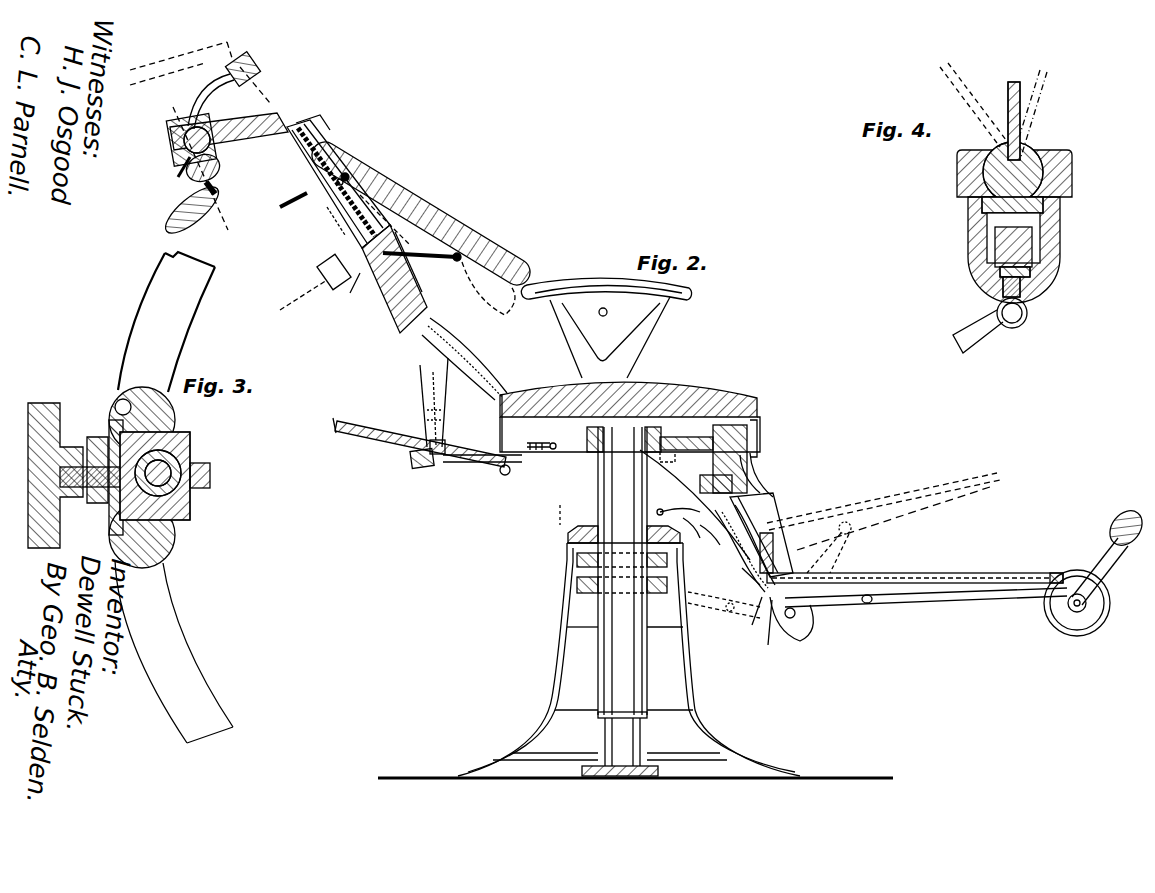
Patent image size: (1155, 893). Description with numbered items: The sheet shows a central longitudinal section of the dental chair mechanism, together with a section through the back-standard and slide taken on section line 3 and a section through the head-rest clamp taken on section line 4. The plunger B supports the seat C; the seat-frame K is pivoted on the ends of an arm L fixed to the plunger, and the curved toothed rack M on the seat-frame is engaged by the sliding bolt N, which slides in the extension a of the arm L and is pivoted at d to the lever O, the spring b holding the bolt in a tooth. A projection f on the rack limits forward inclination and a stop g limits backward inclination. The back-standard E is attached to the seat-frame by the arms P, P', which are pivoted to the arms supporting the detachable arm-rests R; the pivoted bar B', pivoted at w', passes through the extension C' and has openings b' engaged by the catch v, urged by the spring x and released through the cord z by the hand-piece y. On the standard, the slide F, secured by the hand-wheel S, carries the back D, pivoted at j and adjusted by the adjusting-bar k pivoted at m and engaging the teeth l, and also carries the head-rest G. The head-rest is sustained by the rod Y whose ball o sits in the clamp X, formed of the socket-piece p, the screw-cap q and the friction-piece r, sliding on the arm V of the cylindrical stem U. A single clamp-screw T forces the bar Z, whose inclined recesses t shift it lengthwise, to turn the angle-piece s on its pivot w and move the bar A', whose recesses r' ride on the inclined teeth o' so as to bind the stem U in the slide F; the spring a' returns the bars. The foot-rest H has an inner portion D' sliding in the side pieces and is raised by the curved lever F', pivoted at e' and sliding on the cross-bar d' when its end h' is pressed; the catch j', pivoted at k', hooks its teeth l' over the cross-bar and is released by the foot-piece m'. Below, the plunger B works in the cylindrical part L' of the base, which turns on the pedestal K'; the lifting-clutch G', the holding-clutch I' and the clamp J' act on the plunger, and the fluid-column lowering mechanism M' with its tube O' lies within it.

In FIG. 2, the fluid-column lowering mechanism M' is at (635, 745).
In FIG. 2, the pedestal K' is at (629, 659).
In FIG. 2, the lifting-clutch G' is at (598, 573).
In FIG. 2, the clamp J' is at (624, 516).
In FIG. 2, the holding-clutch I' is at (611, 533).
In FIG. 2, the tube O' is at (551, 513).
In FIG. 2, the plunger B is at (622, 571).
In FIG. 2, the seat C is at (630, 401).
In FIG. 2, the arm L is at (583, 438).
In FIG. 2, the spring b is at (541, 437).
In FIG. 2, the sliding bolt N is at (696, 445).
In FIG. 2, the extension a is at (685, 426).
In FIG. 2, the seat-frame K is at (768, 438).
In FIG. 2, the projection f is at (722, 432).
In FIG. 2, the lever O is at (667, 460).
In FIG. 2, the pivot d is at (707, 474).
In FIG. 2, the curved toothed rack M is at (762, 475).
In FIG. 2, the stop g is at (695, 505).
In FIG. 2, the foot-piece m' is at (678, 521).
In FIG. 2, the upper end of lever h' is at (691, 534).
In FIG. 2, the pivot k' is at (710, 539).
In FIG. 2, the curved lever F' is at (742, 548).
In FIG. 2, the inner portion of foot-rest D' is at (768, 535).
In FIG. 2, the teeth l' is at (749, 616).
In FIG. 2, the pivoted catch j' is at (750, 623).
In FIG. 2, the upper cylindrical part L' is at (724, 618).
In FIG. 2, the foot-rest H is at (917, 522).
In FIG. 2, the pivot e' is at (873, 611).
In FIG. 2, the cross-bar d' is at (791, 622).
In FIG. 2, the arm-rests R is at (610, 278).
In FIG. 2, the arm P is at (464, 359).
In FIG. 3, the arm P is at (174, 651).
In FIG. 2, the cord z is at (420, 390).
In FIG. 2, the spring x is at (423, 410).
In FIG. 2, the catch v is at (446, 435).
In FIG. 2, the pivoted bar B' is at (419, 432).
In FIG. 2, the extension C' is at (429, 466).
In FIG. 2, the openings b' is at (482, 443).
In FIG. 2, the pivot w' is at (506, 479).
In FIG. 2, the back-standard E is at (357, 228).
In FIG. 3, the back-standard E is at (165, 543).
In FIG. 2, the slide F is at (414, 269).
In FIG. 3, the slide F is at (163, 476).
In FIG. 2, the cylindrical stem U is at (313, 124).
In FIG. 3, the cylindrical stem U is at (183, 463).
In FIG. 2, the clamp-screw and hand-wheel S is at (329, 271).
In FIG. 3, the clamp-screw and hand-wheel S is at (75, 475).
In FIG. 2, the recesses r' is at (313, 230).
In FIG. 2, the teeth l is at (385, 220).
In FIG. 3, the teeth l is at (203, 475).
In FIG. 2, the spring a' is at (351, 294).
In FIG. 2, the hand-piece y is at (293, 208).
In FIG. 3, the hand-piece y is at (120, 405).
In FIG. 2, the section line 3 is at (337, 271).
In FIG. 2, the back D is at (421, 213).
In FIG. 2, the pivot j is at (357, 155).
In FIG. 2, the inclined teeth o' is at (334, 145).
In FIG. 2, the adjusting-bar k is at (420, 263).
In FIG. 2, the pivot m is at (482, 284).
In FIG. 2, the arm V is at (245, 130).
In FIG. 4, the arm V is at (1033, 240).
In FIG. 2, the clamp X is at (180, 140).
In FIG. 4, the clamp X is at (957, 173).
In FIG. 2, the rod Y is at (211, 97).
In FIG. 4, the rod Y is at (1001, 121).
In FIG. 2, the head-rest G is at (252, 69).
In FIG. 2, the inclined recesses t is at (253, 123).
In FIG. 2, the ball o is at (178, 116).
In FIG. 4, the ball o is at (993, 132).
In FIG. 2, the screw-cap q is at (210, 127).
In FIG. 4, the screw-cap q is at (1085, 167).
In FIG. 2, the friction-piece r is at (222, 125).
In FIG. 4, the friction-piece r is at (1030, 208).
In FIG. 2, the angle-piece s is at (280, 125).
In FIG. 2, the socket-piece p is at (210, 168).
In FIG. 4, the socket-piece p is at (972, 233).
In FIG. 2, the bar Z is at (240, 135).
In FIG. 4, the bar Z is at (1027, 263).
In FIG. 2, the pivot w is at (218, 166).
In FIG. 2, the clamp-screw T is at (185, 210).
In FIG. 4, the clamp-screw T is at (980, 332).
In FIG. 2, the bar A' is at (269, 182).
In FIG. 3, the bar A' is at (197, 504).
In FIG. 2, the section line 4 is at (200, 144).
In FIG. 3, the arm P' is at (166, 322).